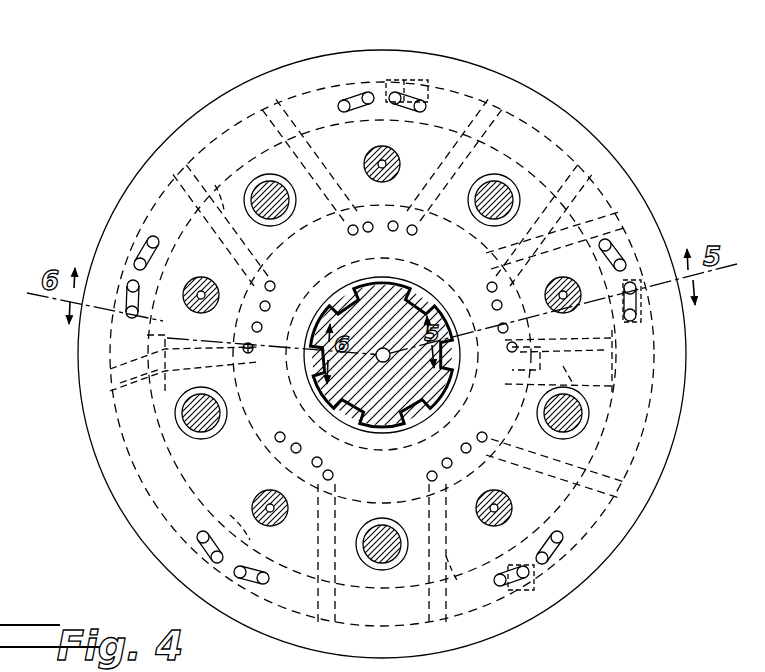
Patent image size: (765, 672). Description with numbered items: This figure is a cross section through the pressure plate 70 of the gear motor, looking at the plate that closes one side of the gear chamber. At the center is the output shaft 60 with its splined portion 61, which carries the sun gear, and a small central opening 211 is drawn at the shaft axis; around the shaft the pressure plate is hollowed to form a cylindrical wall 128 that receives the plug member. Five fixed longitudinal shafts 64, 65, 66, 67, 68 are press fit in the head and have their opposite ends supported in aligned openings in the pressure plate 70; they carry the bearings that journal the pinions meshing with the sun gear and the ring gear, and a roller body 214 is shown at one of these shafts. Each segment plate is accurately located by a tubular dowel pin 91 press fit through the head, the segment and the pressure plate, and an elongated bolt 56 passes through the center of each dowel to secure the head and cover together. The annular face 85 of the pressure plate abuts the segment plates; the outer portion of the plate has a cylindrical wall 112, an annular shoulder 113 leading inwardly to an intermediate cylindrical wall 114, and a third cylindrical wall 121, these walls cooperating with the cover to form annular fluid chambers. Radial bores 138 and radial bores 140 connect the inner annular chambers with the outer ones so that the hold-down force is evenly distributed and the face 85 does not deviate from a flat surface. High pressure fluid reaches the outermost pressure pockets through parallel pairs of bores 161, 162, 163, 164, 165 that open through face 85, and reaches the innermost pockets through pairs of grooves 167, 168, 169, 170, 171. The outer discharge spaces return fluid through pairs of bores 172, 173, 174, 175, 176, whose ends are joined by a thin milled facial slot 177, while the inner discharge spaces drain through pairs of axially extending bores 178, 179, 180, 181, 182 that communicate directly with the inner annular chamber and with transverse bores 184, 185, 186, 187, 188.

The elongated bolt 56 is at (262, 178).
The output shaft 60 is at (384, 370).
The splined portion 61 is at (444, 392).
The fixed longitudinal shaft 64 is at (398, 158).
The fixed longitudinal shaft 65 is at (201, 277).
The fixed longitudinal shaft 66 is at (272, 525).
The fixed longitudinal shaft 67 is at (490, 525).
The fixed longitudinal shaft 68 is at (568, 312).
The pressure plate 70 is at (586, 158).
The annular face 85 is at (660, 384).
The tubular dowel pin 91 is at (556, 394).
The cylindrical wall 112 is at (642, 514).
The annular shoulder 113 is at (620, 663).
The intermediate cylindrical wall 114 is at (630, 480).
The third cylindrical wall 121 is at (600, 452).
The cylindrical wall 128 is at (408, 282).
The radial bores 138 is at (558, 378).
The radial bores 140 is at (248, 347).
The pair of bores 161 is at (344, 100).
The pair of bores 162 is at (127, 313).
The pair of bores 163 is at (236, 581).
The pair of bores 164 is at (556, 562).
The pair of bores 165 is at (615, 240).
The pair of grooves 167 is at (489, 163).
The pair of grooves 168 is at (217, 191).
The pair of grooves 169 is at (233, 520).
The pair of grooves 170 is at (462, 582).
The pair of grooves 171 is at (612, 340).
The pair of bores 172 is at (422, 103).
The pair of bores 173 is at (160, 238).
The pair of bores 174 is at (200, 532).
The pair of bores 175 is at (500, 586).
The pair of bores 176 is at (636, 316).
The milled facial slot 177 is at (414, 96).
The pair of axially extending bores 178 is at (372, 222).
The pair of axially extending bores 179 is at (258, 330).
The pair of axially extending bores 180 is at (334, 474).
The pair of axially extending bores 181 is at (478, 437).
The pair of axially extending bores 182 is at (486, 286).
The transverse bore 184 is at (332, 149).
The transverse bore 185 is at (165, 379).
The transverse bore 186 is at (339, 628).
The transverse bore 187 is at (520, 488).
The transverse bore 188 is at (586, 206).
The center bore 211 is at (390, 360).
The roller 214 is at (370, 173).